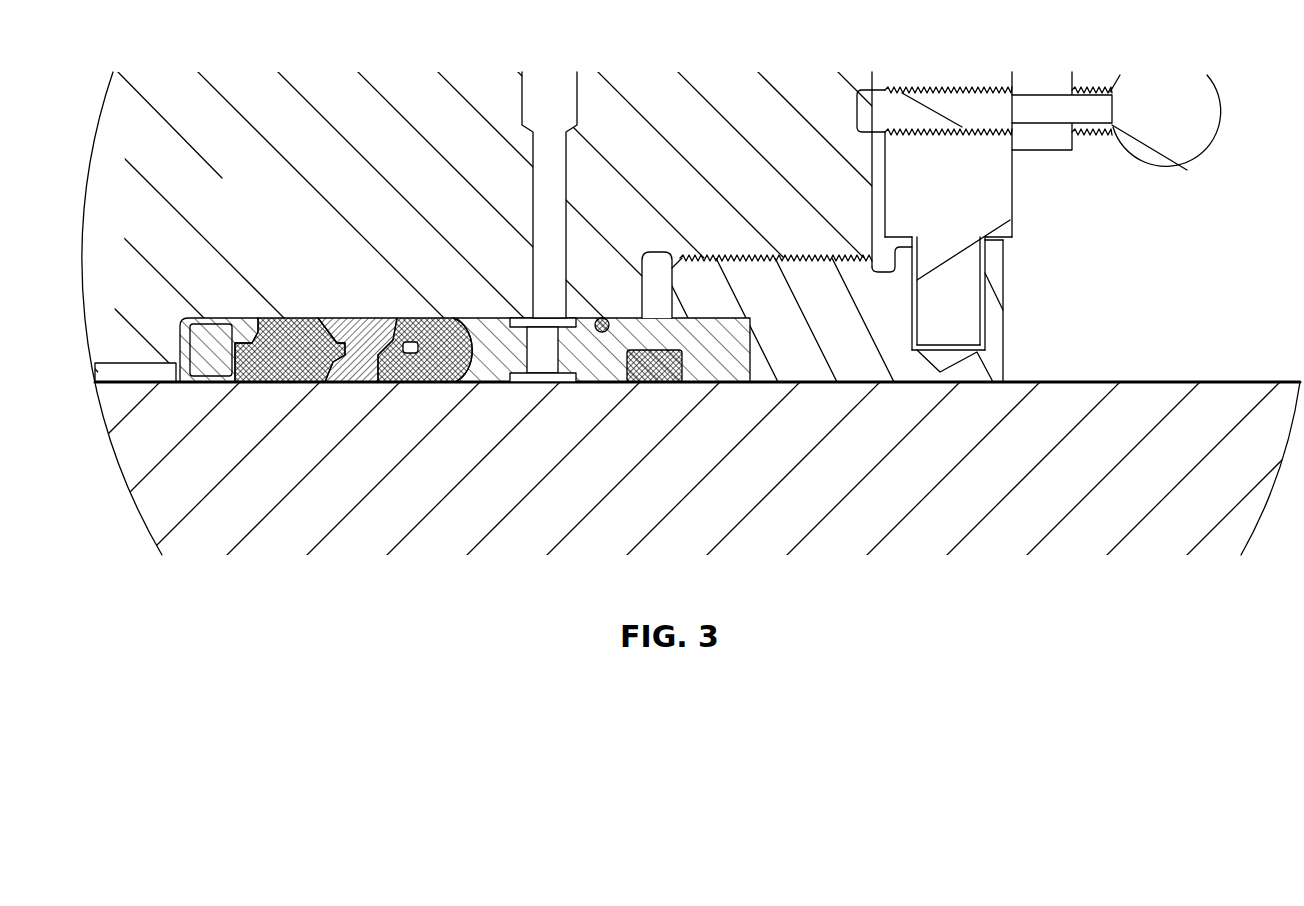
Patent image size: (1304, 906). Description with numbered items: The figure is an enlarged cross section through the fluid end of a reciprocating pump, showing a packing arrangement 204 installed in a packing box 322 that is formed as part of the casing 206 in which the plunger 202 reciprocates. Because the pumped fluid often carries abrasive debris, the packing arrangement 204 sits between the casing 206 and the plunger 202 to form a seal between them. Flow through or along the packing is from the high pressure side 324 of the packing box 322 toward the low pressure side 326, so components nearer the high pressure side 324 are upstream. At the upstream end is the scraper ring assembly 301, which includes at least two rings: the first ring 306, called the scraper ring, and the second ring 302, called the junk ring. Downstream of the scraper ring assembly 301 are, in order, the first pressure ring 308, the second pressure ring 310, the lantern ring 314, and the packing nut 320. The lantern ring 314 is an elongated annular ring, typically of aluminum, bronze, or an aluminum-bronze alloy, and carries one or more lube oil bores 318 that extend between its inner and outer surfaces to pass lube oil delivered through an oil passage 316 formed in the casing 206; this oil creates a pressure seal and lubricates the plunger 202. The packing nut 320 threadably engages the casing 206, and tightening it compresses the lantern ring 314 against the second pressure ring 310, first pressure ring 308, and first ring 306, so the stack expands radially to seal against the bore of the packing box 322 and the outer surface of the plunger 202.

The plunger 202 is at (469, 532).
The packing arrangement 204 is at (346, 189).
The casing 206 is at (449, 118).
The scraper ring assembly 301 is at (455, 326).
The second ring 302 is at (211, 316).
The first ring 306 is at (290, 324).
The first pressure ring 308 is at (356, 316).
The second pressure ring 310 is at (425, 308).
The lantern ring 314 is at (491, 316).
The oil passage 316 is at (558, 200).
The lube oil bore 318 is at (562, 365).
The packing nut 320 is at (797, 308).
The packing box 322 is at (648, 277).
The high pressure side 324 is at (157, 349).
The low pressure side 326 is at (1070, 332).